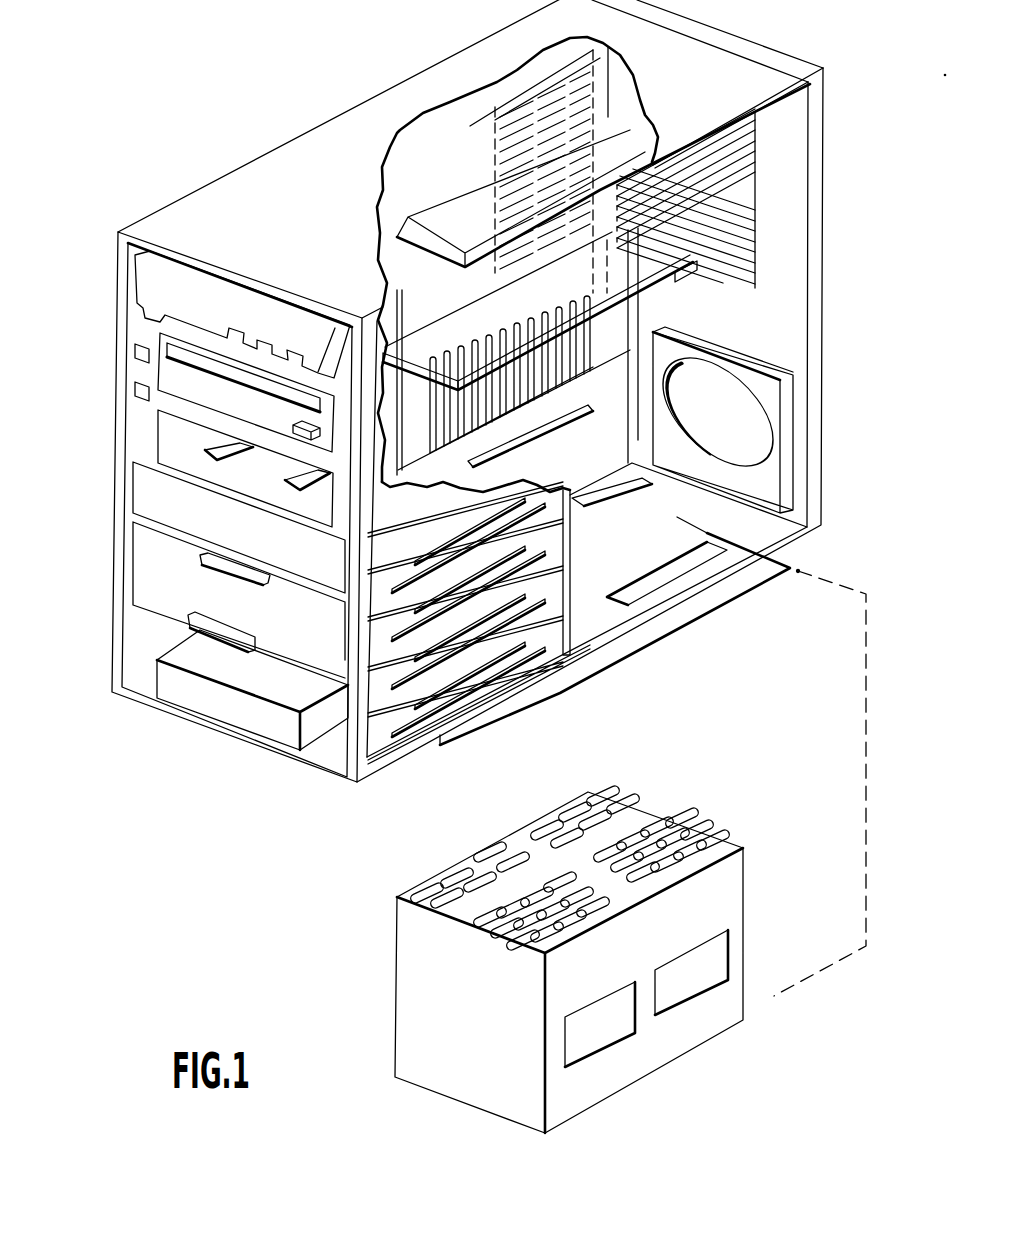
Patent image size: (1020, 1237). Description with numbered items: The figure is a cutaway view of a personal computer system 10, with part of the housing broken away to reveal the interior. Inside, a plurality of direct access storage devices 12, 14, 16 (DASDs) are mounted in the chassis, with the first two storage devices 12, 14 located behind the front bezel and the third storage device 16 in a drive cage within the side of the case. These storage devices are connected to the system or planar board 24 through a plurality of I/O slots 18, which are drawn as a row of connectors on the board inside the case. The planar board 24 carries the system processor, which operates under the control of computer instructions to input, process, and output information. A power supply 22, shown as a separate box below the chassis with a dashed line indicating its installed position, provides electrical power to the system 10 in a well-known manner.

The personal computer system 10 is at (300, 68).
The direct access storage device 12 is at (140, 368).
The direct access storage device 14 is at (177, 440).
The direct access storage device 16 is at (383, 733).
The I/O slots 18 is at (647, 267).
The power supply 22 is at (465, 1078).
The planar board 24 is at (588, 345).